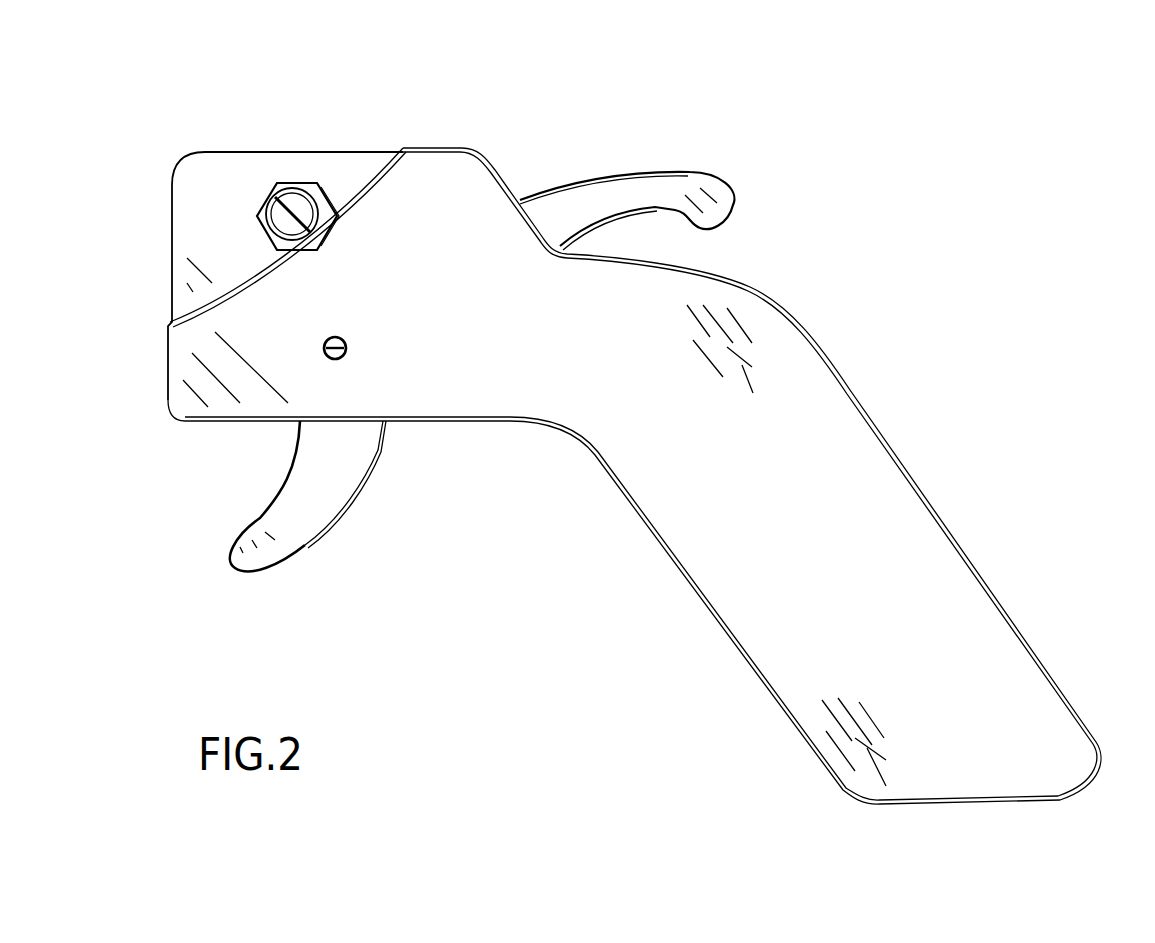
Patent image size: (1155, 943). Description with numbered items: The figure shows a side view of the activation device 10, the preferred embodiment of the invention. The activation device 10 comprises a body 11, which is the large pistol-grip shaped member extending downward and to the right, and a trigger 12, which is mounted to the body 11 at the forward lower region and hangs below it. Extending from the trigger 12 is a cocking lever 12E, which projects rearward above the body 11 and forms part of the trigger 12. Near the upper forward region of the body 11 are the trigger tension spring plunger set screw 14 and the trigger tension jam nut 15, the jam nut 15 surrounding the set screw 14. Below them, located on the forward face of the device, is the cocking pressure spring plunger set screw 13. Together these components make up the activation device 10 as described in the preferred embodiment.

The activation device 10 is at (592, 505).
The body 11 is at (786, 614).
The trigger 12 is at (303, 518).
The cocking lever 12E is at (667, 182).
The cocking pressure spring plunger set screw 13 is at (325, 355).
The trigger tension spring plunger set screw 14 is at (287, 190).
The trigger tension jam nut 15 is at (313, 183).